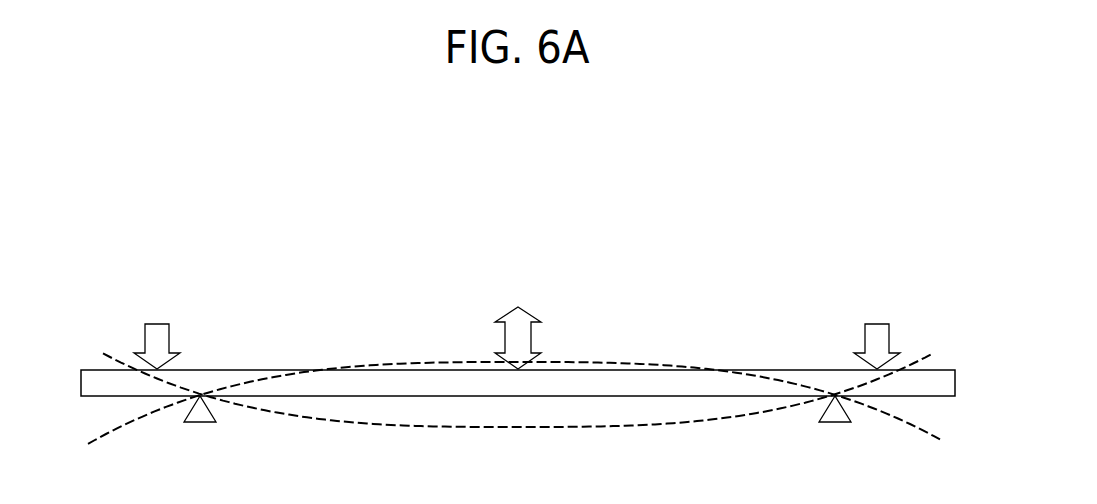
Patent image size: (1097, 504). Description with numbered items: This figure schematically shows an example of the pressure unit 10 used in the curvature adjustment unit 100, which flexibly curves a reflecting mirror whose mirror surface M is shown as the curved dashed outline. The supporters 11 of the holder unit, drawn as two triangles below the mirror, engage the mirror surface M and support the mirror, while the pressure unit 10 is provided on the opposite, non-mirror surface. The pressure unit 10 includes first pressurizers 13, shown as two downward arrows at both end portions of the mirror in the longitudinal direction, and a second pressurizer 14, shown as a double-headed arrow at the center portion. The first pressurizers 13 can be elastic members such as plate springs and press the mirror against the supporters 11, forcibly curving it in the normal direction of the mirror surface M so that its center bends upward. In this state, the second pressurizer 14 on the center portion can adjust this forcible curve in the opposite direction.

The curvature adjustment unit 100 is at (650, 147).
The pressure unit 10 is at (894, 278).
The supporters 11 is at (200, 423).
The first pressurizers 13 is at (158, 324).
The second pressurizer 14 is at (525, 212).
The mirror surface M is at (563, 397).